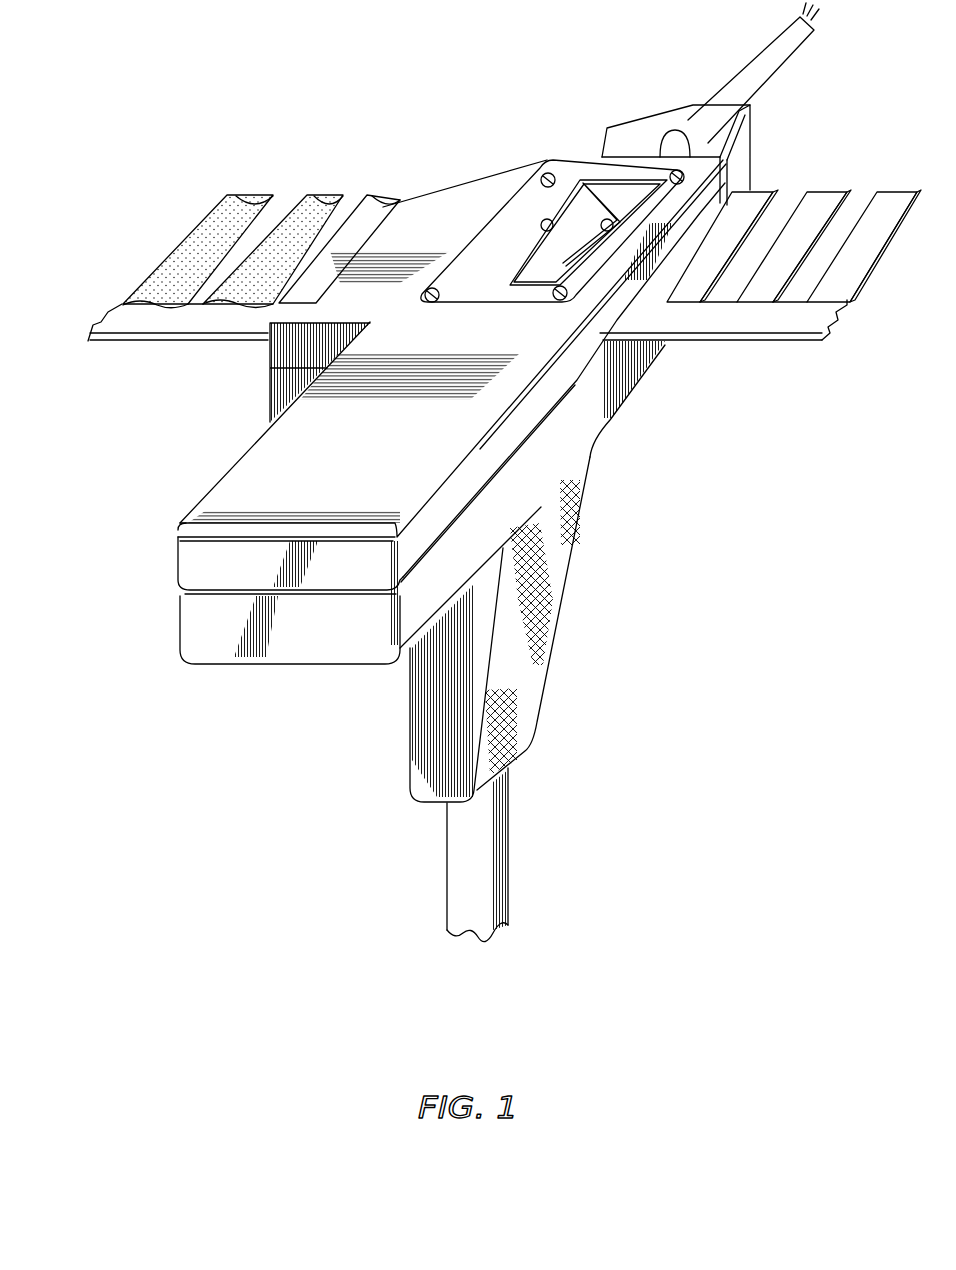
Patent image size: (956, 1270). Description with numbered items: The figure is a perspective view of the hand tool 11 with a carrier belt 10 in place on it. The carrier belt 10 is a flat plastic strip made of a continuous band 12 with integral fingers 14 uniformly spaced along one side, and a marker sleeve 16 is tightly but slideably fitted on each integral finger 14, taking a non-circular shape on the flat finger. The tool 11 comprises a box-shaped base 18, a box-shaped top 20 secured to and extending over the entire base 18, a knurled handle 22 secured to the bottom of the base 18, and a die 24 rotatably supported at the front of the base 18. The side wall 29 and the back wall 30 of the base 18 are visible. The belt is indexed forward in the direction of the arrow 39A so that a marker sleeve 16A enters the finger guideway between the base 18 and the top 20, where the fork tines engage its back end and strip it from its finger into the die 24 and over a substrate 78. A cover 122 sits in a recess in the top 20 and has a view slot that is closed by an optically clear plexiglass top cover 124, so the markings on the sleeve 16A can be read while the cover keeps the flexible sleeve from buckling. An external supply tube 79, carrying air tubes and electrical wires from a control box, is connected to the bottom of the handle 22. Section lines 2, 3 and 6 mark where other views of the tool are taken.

The carrier belt 10 is at (760, 60).
The hand tool 11 is at (162, 582).
The continuous band 12 is at (212, 333).
The integral fingers 14 is at (395, 190).
The marker sleeve 16 is at (163, 292).
The marker sleeve 16A is at (657, 147).
The base 18 is at (630, 374).
The top 20 is at (243, 455).
The knurled handle 22 is at (537, 637).
The die 24 is at (750, 103).
The side wall 29 is at (593, 427).
The back wall 30 is at (335, 650).
The abrasive strip 39A is at (245, 265).
The substrate 78 is at (773, 40).
The external supply tube 79 is at (493, 850).
The cover 122 is at (457, 293).
The top cover 124 is at (513, 257).
The section line 2- 2 is at (477, 337).
The section line 3- 3 is at (780, 167).
The section line 6- 6 is at (272, 252).